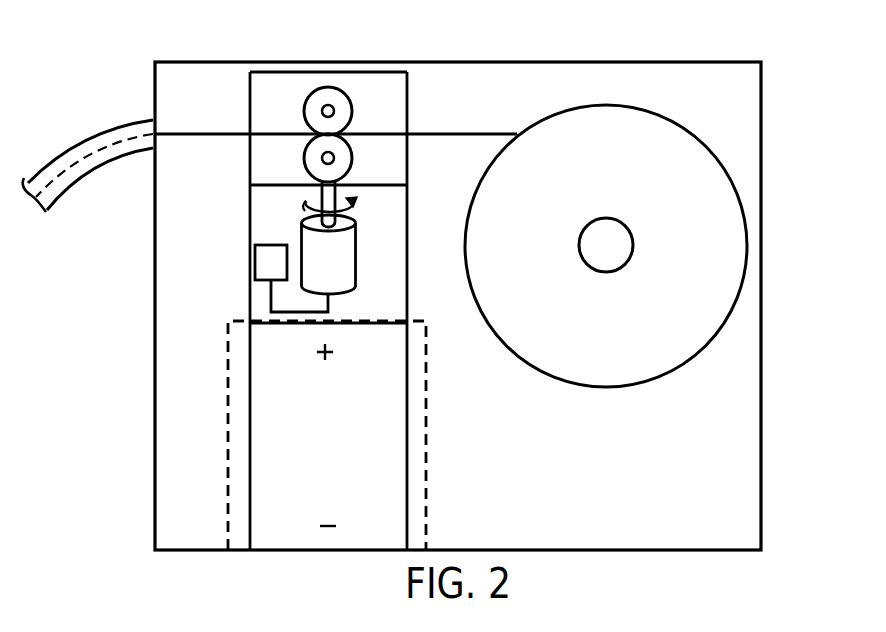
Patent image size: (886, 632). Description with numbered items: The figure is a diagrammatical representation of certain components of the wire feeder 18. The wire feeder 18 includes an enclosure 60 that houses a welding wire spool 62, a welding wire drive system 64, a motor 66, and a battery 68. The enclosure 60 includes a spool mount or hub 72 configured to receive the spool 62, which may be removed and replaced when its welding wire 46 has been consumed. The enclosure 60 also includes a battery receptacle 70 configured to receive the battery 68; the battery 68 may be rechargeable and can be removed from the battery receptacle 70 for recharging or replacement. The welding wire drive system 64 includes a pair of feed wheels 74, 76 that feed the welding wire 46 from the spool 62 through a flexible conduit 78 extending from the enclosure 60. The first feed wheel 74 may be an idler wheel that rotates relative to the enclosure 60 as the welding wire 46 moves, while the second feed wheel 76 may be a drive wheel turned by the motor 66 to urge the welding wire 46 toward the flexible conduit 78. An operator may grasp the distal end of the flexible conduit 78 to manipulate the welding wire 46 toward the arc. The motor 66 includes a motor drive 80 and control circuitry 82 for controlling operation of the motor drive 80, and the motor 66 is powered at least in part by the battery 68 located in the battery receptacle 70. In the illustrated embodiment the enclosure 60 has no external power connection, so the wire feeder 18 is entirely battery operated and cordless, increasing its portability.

The wire feeder 18 is at (794, 62).
The welding wire 46 is at (200, 134).
The enclosure 60 is at (761, 297).
The welding wire spool 62 is at (606, 246).
The welding wire drive system 64 is at (407, 100).
The motor 66 is at (250, 240).
The battery 68 is at (328, 424).
The battery receptacle 70 is at (427, 433).
The spool mount 72 is at (609, 245).
The first feed wheel 74 is at (311, 96).
The second feed wheel 76 is at (352, 158).
The flexible conduit 78 is at (63, 157).
The motor drive 80 is at (357, 253).
The control circuitry 82 is at (272, 245).